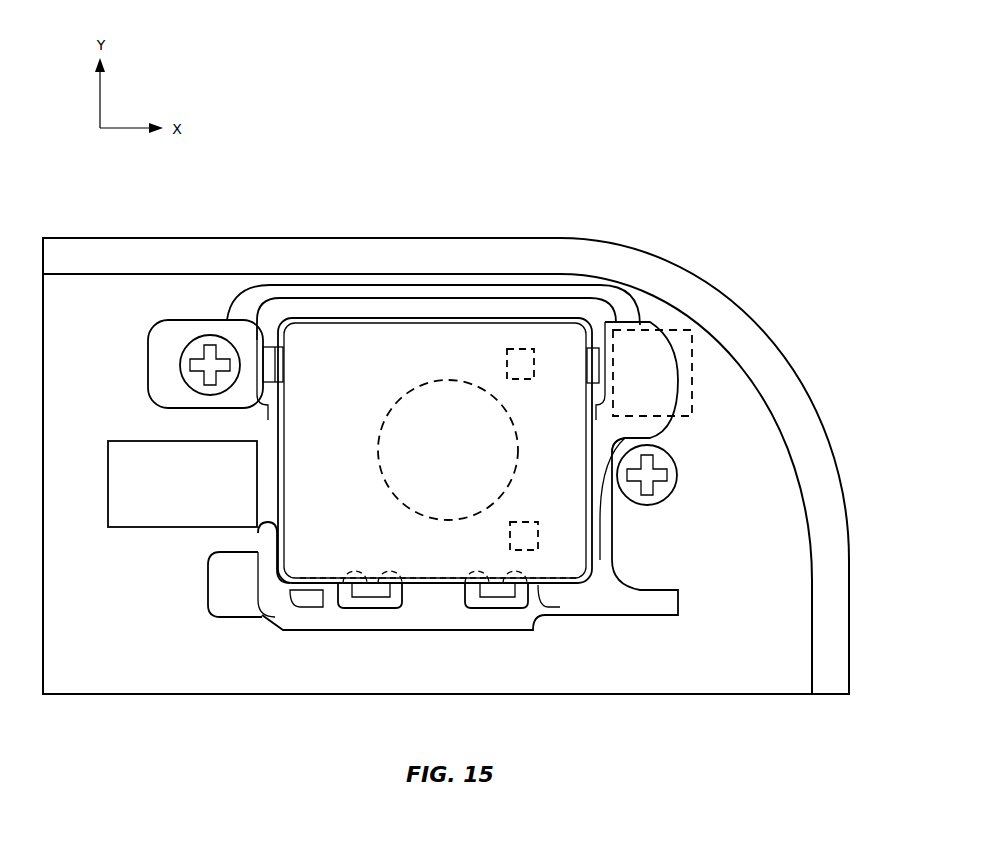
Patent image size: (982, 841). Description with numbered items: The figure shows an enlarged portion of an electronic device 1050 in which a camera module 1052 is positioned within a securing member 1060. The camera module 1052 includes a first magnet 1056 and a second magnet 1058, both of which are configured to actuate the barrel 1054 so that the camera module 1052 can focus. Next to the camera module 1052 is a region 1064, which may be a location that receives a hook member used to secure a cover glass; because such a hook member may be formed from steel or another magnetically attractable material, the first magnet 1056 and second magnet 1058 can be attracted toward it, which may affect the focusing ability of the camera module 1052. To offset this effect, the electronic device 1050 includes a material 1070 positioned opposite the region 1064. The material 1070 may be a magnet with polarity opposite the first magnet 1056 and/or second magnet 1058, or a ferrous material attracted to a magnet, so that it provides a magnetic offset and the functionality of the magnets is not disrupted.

The electronic device 1050 is at (700, 114).
The camera module 1052 is at (348, 303).
The barrel 1054 is at (448, 380).
The first magnet 1056 is at (534, 355).
The second magnet 1058 is at (538, 545).
The securing member 1060 is at (292, 583).
The region 1064 is at (676, 330).
The material 1070 is at (188, 527).